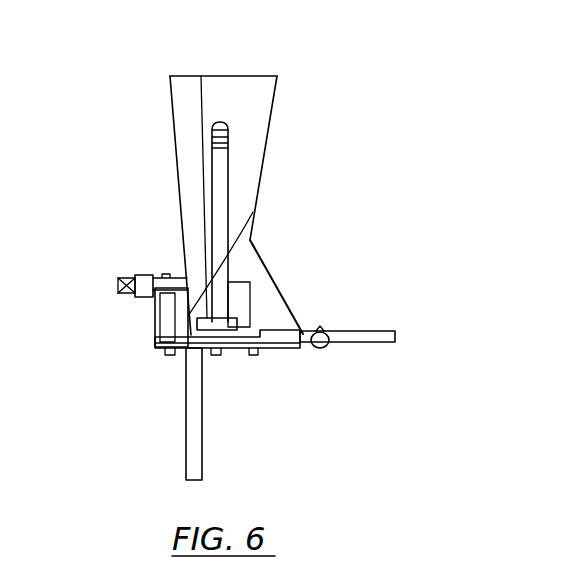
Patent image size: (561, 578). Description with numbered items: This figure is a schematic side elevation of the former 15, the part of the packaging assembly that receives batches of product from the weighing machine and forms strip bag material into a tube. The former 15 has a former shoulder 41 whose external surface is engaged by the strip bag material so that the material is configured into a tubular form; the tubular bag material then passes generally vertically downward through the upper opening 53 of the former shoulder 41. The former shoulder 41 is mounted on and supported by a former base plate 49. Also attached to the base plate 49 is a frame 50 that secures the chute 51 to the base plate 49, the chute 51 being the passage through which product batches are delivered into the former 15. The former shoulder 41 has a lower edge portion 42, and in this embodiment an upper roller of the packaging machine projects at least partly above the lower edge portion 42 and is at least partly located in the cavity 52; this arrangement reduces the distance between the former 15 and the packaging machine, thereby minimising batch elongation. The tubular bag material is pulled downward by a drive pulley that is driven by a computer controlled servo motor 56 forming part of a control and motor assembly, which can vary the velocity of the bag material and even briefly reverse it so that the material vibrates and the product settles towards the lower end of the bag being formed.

The former 15 is at (408, 162).
The former shoulder 41 is at (283, 288).
The lower edge portion 42 is at (297, 328).
The former base plate 49 is at (277, 353).
The frame 50 is at (208, 190).
The chute 51 is at (268, 137).
The cavity 52 is at (266, 356).
The upper opening 53 is at (186, 275).
The servo motor 56 is at (186, 381).